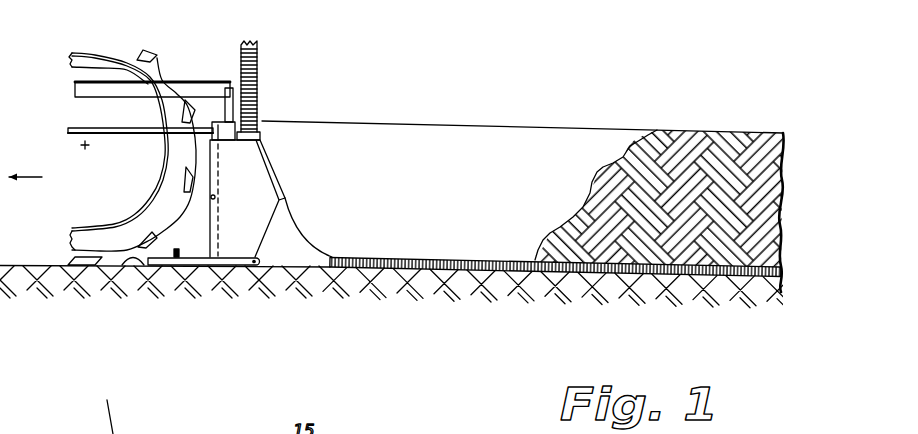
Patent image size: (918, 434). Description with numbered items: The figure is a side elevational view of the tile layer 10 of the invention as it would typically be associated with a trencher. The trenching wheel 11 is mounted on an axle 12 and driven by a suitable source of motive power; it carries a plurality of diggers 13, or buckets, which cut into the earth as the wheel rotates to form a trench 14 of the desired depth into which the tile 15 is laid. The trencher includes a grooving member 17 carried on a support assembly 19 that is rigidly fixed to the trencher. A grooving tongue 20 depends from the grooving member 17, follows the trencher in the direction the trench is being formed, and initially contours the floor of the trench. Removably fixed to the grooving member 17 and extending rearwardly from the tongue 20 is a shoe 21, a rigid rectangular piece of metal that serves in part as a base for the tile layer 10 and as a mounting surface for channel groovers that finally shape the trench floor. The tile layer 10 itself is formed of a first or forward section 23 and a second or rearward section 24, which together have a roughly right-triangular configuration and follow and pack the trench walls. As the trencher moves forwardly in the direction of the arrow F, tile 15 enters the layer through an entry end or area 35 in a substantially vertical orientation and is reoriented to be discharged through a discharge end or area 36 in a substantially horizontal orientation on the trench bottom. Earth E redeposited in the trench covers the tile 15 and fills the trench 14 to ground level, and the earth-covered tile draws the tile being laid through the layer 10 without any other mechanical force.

The tile layer 10 is at (351, 177).
The trenching wheel 11 is at (106, 47).
The axle 12 is at (86, 150).
The diggers 13 is at (96, 250).
The trench 14 is at (510, 147).
The tile 15 is at (262, 67).
The grooving member 17 is at (176, 268).
The support assembly 19 is at (221, 82).
The grooving tongue 20 is at (113, 268).
The shoe 21 is at (156, 267).
The first or forward section 23 is at (247, 242).
The second or rearward section 24 is at (309, 261).
The entry end or area 35 is at (270, 134).
The discharge end or area 36 is at (341, 247).
The earth E is at (614, 199).
The arrow indicating forward direction F is at (25, 165).